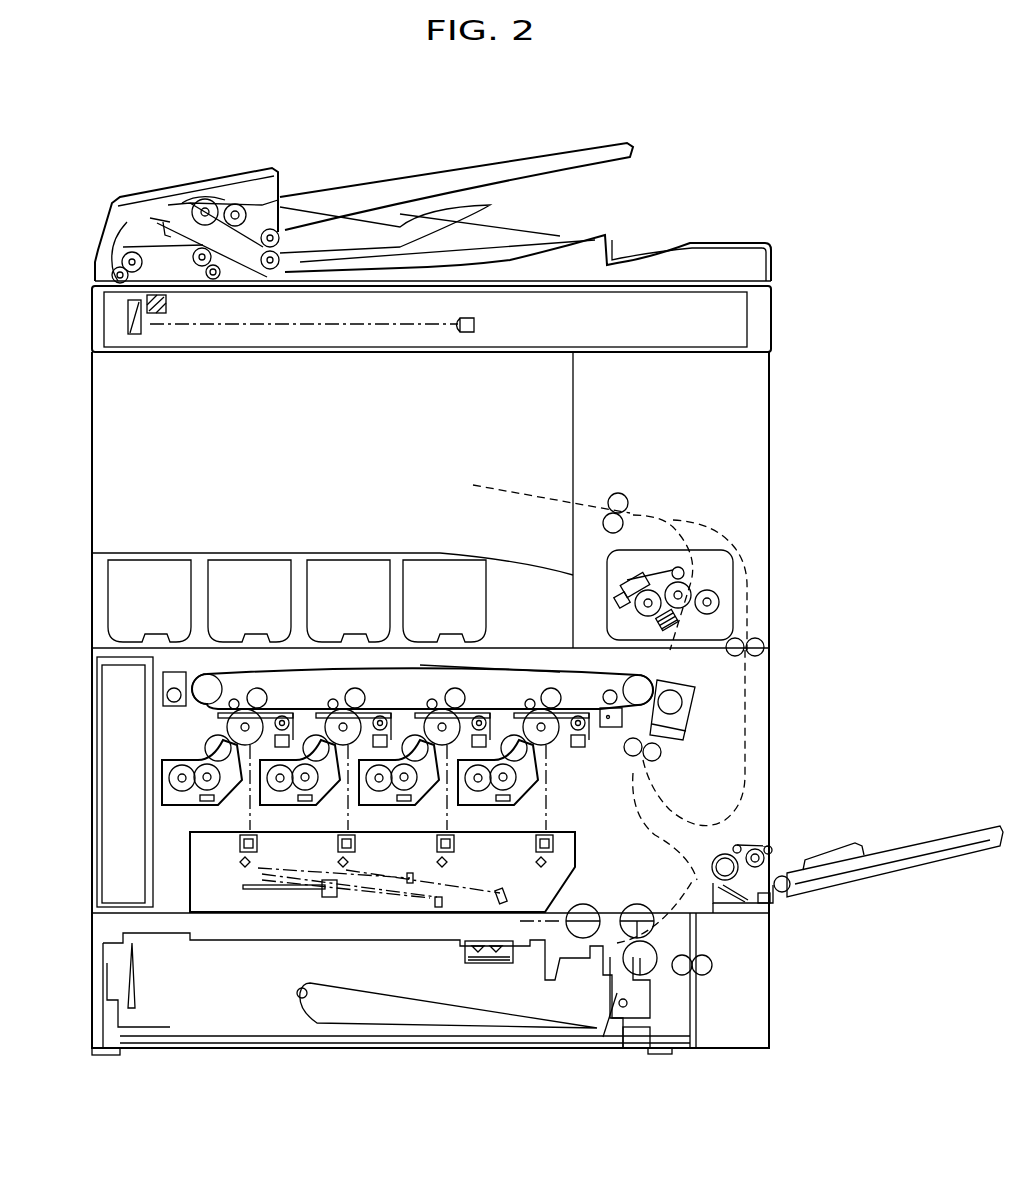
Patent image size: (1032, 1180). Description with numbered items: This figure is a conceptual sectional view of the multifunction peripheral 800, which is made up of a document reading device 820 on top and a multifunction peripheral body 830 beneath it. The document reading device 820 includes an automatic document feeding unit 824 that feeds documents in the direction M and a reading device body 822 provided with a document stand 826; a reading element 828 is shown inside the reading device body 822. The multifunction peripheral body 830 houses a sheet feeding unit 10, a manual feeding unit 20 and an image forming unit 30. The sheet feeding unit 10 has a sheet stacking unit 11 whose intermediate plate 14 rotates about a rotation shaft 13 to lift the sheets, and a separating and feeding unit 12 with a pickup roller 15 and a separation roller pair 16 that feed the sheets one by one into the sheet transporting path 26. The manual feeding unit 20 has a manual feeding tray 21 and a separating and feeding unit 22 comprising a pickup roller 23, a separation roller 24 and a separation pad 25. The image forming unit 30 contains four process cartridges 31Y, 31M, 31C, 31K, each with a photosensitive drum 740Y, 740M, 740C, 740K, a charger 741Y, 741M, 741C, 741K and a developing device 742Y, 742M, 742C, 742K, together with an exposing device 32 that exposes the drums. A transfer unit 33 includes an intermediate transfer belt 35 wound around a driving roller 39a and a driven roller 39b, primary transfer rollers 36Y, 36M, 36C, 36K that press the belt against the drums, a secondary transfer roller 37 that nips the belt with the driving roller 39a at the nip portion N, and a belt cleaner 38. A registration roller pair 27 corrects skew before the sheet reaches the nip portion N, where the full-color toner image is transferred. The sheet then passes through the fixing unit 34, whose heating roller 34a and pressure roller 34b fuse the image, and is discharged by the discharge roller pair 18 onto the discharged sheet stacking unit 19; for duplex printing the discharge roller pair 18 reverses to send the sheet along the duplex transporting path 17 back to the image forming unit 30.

The multifunction peripheral 800 is at (775, 208).
The document reading device 820 is at (773, 322).
The multifunction peripheral body 830 is at (773, 403).
The automatic document feeding unit 824 is at (226, 160).
The document stand 826 is at (513, 280).
The reading sensor 828 is at (467, 333).
The reading device body 822 is at (90, 300).
The document feeding direction M is at (432, 123).
The nip portion N is at (640, 665).
The sheet feeding unit 10 is at (800, 987).
The sheet stacking unit 11 is at (637, 1048).
The separating and feeding unit 12 is at (662, 987).
The rotation shaft 13 is at (302, 1000).
The intermediate plate 14 is at (488, 1012).
The pickup roller 15 is at (584, 904).
The separation roller pair 16 is at (638, 904).
The duplex transporting path 17 is at (740, 550).
The discharge roller pair 18 is at (620, 492).
The discharged sheet stacking unit 19 is at (287, 553).
The manual feeding unit 20 is at (857, 768).
The manual feeding tray 21 is at (877, 847).
The separating and feeding unit 22 is at (789, 870).
The pickup roller 23 is at (763, 852).
The separation roller 24 is at (728, 853).
The separation pad 25 is at (723, 895).
The sheet transporting path 26 is at (675, 765).
The registration roller pair 27 is at (658, 760).
The image forming unit 30 is at (225, 712).
The process cartridge 31Y is at (234, 817).
The process cartridge 31M is at (336, 817).
The process cartridge 31C is at (435, 817).
The process cartridge 31K is at (533, 817).
The exposing device 32 is at (193, 866).
The transfer unit 33 is at (514, 652).
The fixing unit 34 is at (735, 570).
The heating roller 34a is at (690, 594).
The pressure roller 34b is at (716, 602).
The intermediate transfer belt 35 is at (548, 672).
The primary transfer roller 36Y is at (258, 687).
The primary transfer roller 36M is at (356, 687).
The primary transfer roller 36C is at (455, 687).
The primary transfer roller 36K is at (560, 735).
The secondary transfer roller 37 is at (683, 700).
The belt cleaner 38 is at (172, 670).
The driving roller 39a is at (643, 680).
The driven roller 39b is at (207, 672).
The photosensitive drum 740Y is at (232, 727).
The photosensitive drum 740M is at (340, 712).
The photosensitive drum 740C is at (438, 712).
The photosensitive drum 740K is at (532, 713).
The charger 741Y is at (262, 800).
The charger 741M is at (356, 800).
The charger 741C is at (450, 790).
The charger 741K is at (540, 770).
The developing device 742Y is at (172, 805).
The developing device 742M is at (270, 805).
The developing device 742C is at (372, 805).
The developing device 742K is at (470, 805).